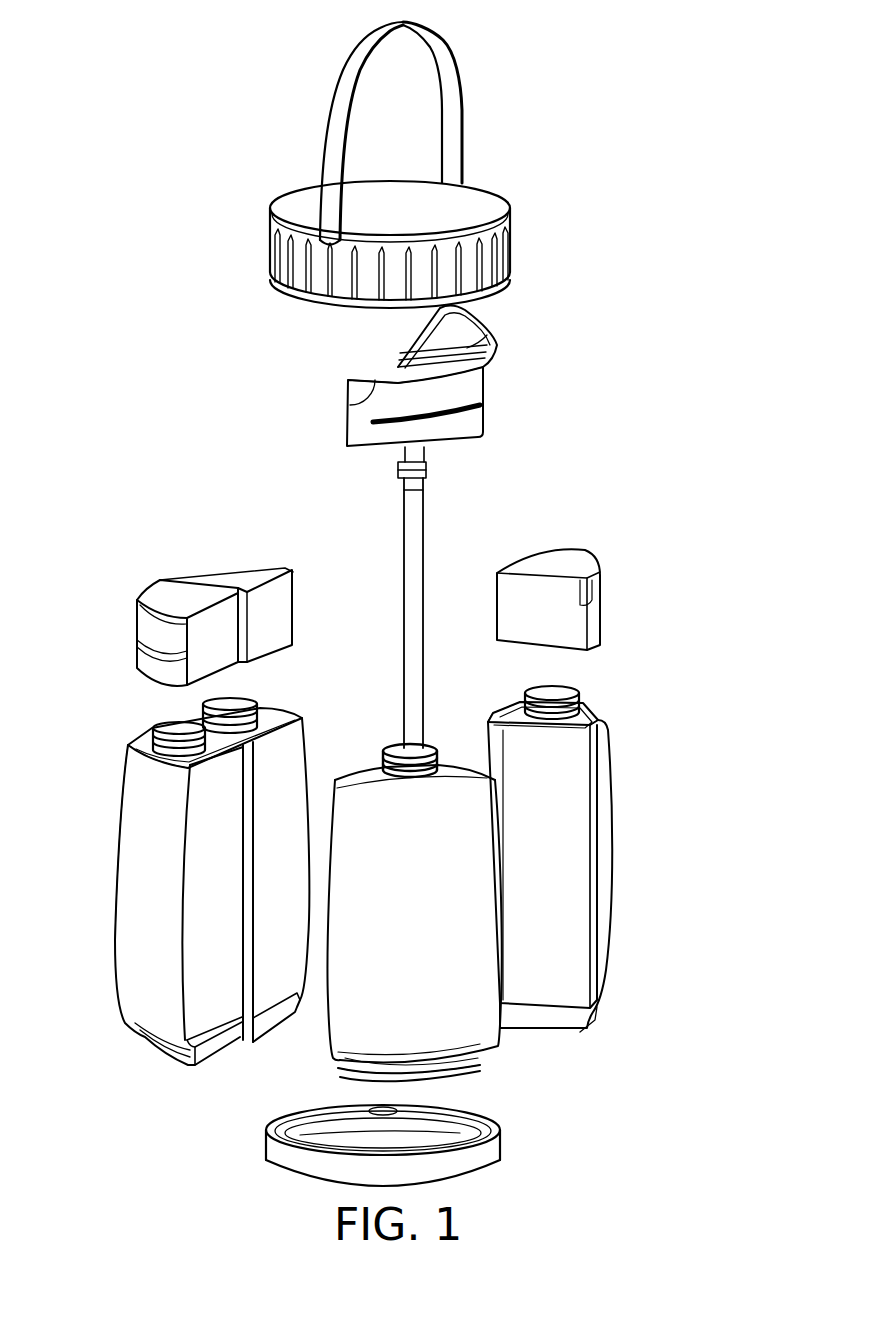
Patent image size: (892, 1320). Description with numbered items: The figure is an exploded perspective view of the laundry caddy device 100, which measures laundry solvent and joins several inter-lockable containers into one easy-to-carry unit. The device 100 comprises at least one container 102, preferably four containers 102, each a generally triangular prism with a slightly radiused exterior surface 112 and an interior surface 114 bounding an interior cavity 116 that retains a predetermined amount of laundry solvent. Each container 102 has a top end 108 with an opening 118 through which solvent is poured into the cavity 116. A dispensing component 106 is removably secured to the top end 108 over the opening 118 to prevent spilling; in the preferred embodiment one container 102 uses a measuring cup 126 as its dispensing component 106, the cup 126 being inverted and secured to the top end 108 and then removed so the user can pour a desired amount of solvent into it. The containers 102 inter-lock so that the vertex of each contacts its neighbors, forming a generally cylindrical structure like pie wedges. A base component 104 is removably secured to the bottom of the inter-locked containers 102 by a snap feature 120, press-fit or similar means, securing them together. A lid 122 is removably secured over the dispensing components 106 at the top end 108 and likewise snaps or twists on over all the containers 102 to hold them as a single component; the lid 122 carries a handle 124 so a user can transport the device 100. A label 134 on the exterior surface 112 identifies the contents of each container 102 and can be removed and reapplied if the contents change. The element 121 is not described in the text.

The laundry caddy device 100 is at (680, 93).
The container 102 is at (472, 1043).
The base component 104 is at (480, 1163).
The dispensing component 106 is at (477, 397).
The top end 108 is at (593, 713).
The exterior surface 112 is at (603, 770).
The interior surface 114 is at (177, 717).
The interior cavity 116 is at (386, 377).
The opening 118 is at (560, 690).
The snap feature 120 is at (388, 1081).
The protrusion on base 121 is at (377, 1111).
The lid 122 is at (513, 217).
The handle 124 is at (340, 97).
The measuring cup 126 is at (470, 340).
The label 134 is at (432, 980).